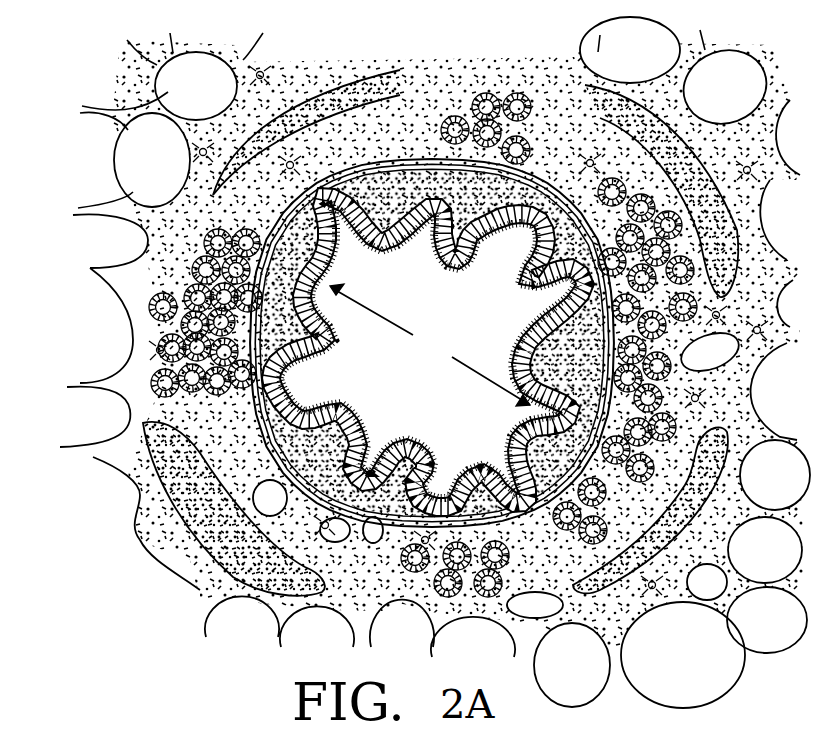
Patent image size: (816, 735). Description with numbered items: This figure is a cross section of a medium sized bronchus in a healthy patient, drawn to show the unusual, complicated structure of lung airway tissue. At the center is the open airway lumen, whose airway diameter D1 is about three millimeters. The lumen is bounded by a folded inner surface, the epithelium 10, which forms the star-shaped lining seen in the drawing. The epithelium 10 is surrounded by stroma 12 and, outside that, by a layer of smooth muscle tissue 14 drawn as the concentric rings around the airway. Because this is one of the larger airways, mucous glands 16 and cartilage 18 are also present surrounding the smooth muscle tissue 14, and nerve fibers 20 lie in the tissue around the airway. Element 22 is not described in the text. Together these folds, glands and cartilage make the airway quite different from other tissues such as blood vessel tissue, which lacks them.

The epithelium 10 is at (300, 178).
The smooth muscle wall layer 22 is at (305, 207).
The smooth muscle tissue 14 is at (290, 240).
The mucous glands 16 is at (130, 309).
The nerve fibers 20 is at (130, 346).
The stroma 12 is at (117, 440).
The cartilage 18 is at (197, 567).
The airway diameter D1 is at (430, 345).